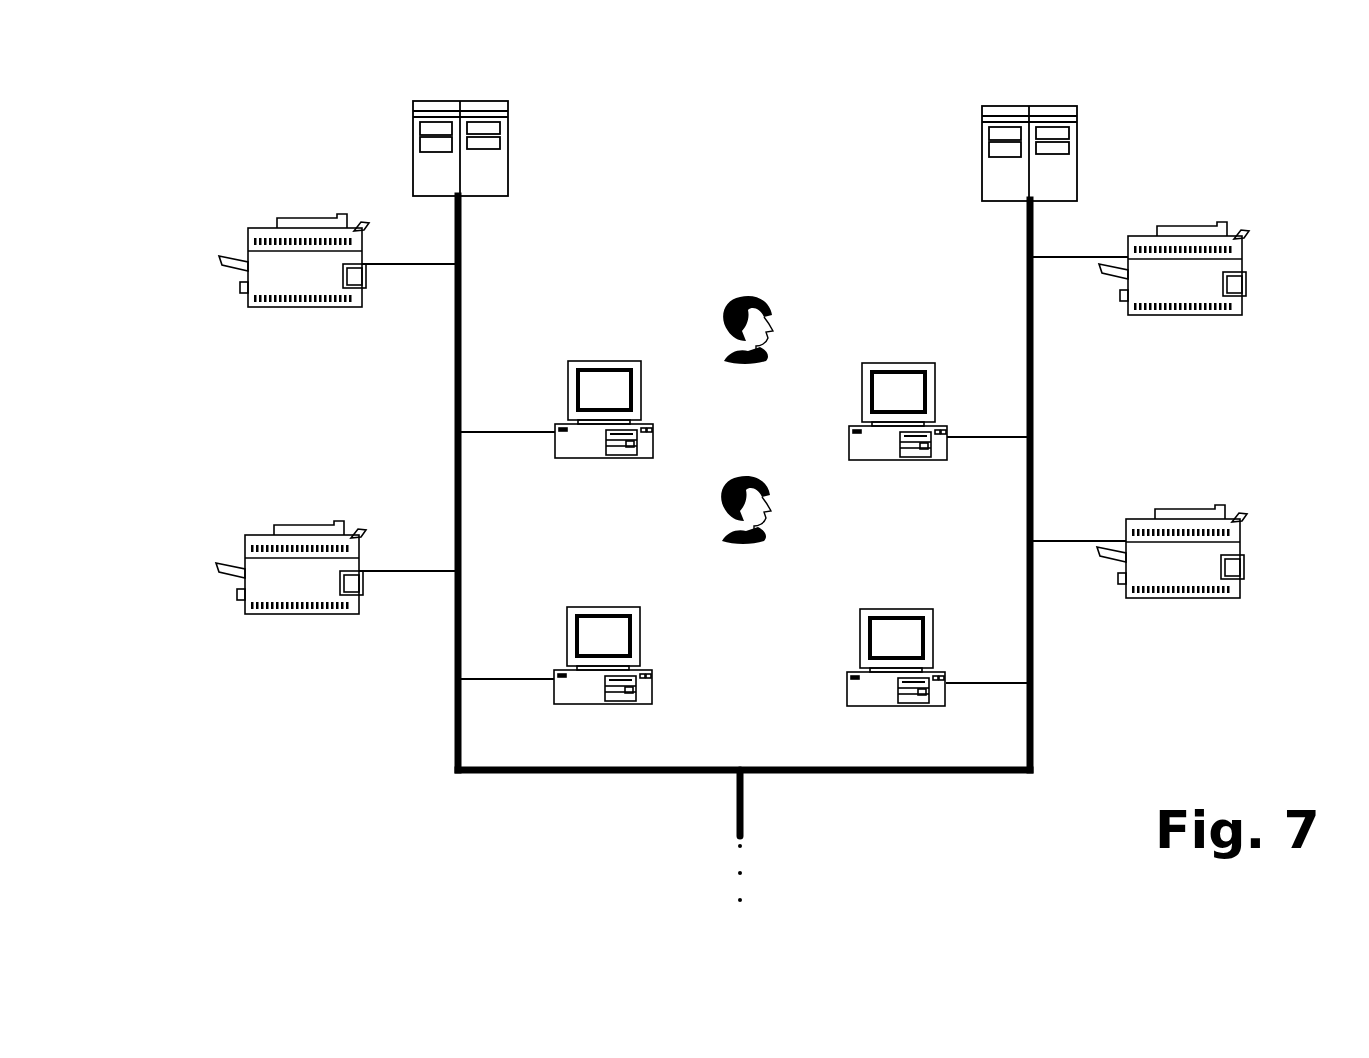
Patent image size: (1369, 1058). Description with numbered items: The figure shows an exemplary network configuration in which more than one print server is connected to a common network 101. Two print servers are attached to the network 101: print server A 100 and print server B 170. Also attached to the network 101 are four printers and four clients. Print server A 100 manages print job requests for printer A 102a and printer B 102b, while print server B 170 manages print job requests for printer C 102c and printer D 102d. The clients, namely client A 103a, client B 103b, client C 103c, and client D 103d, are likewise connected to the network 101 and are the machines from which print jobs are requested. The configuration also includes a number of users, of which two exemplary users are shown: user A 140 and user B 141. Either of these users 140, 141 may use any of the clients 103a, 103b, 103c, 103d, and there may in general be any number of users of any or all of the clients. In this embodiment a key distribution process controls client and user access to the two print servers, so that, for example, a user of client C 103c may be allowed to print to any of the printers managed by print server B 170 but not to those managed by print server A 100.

The print server A 100 is at (530, 152).
The print server B 170 is at (1095, 163).
The network 101 is at (746, 818).
The printer A 102a is at (197, 253).
The printer B 102b is at (197, 586).
The printer C 102c is at (1250, 266).
The printer D 102d is at (1248, 545).
The client A 103a is at (555, 393).
The client B 103b is at (554, 640).
The client C 103c is at (938, 378).
The client D 103d is at (938, 624).
The user A 140 is at (768, 296).
The user B 141 is at (768, 530).